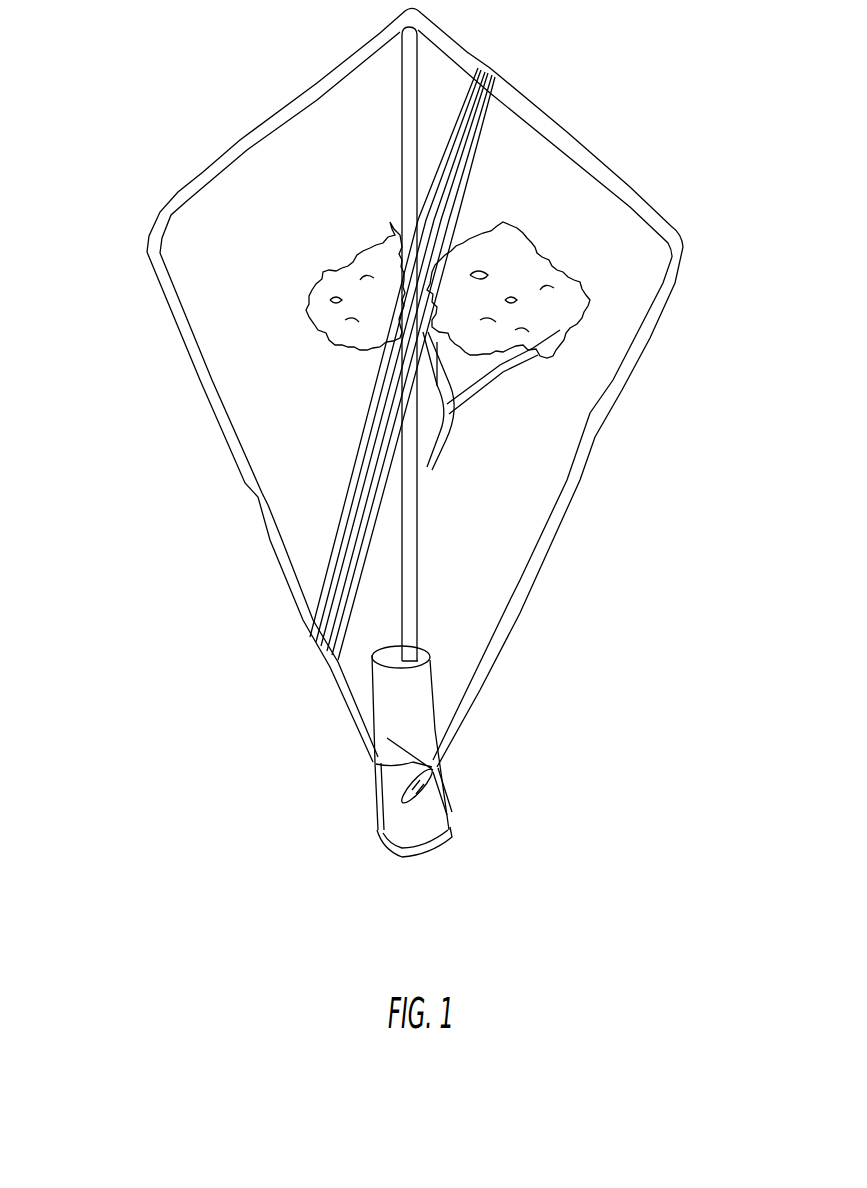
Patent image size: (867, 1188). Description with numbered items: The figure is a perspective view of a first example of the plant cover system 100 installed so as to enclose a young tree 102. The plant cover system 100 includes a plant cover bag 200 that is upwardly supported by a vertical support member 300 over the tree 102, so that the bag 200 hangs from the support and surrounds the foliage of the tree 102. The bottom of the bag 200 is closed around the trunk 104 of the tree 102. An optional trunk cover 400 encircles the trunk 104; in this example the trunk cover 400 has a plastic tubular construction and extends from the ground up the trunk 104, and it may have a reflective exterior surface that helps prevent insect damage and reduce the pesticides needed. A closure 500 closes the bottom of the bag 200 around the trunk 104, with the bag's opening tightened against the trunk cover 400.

The plant cover system 100 is at (116, 283).
The plant cover bag 200 is at (682, 257).
The vertical support member 300 is at (405, 133).
The trunk 104 is at (394, 627).
The tree 102 is at (478, 414).
The trunk cover 400 is at (430, 803).
The closure 500 is at (449, 762).